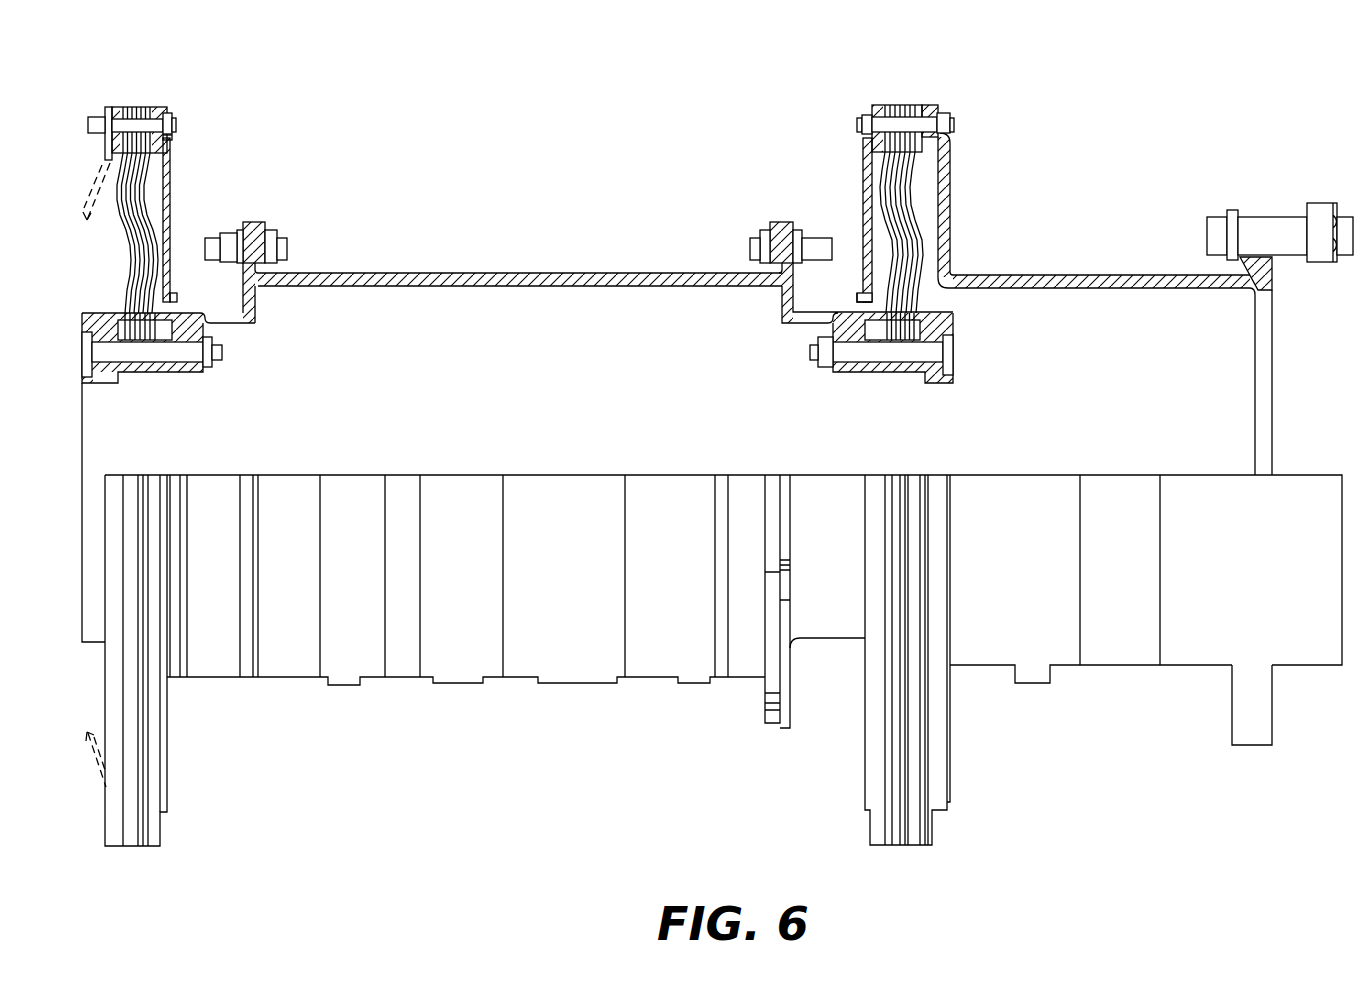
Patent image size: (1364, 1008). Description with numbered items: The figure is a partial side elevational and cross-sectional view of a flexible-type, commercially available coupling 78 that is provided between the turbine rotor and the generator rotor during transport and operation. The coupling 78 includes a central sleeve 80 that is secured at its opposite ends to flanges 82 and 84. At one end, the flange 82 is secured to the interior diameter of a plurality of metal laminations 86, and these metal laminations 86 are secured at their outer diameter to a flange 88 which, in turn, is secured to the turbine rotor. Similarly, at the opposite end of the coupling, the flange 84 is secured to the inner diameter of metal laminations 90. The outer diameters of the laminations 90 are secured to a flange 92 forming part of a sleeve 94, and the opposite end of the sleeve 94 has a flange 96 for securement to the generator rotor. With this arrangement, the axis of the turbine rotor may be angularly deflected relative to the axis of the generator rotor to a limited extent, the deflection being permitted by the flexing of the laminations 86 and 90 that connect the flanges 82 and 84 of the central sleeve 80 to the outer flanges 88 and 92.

The coupling 78 is at (623, 221).
The central sleeve 80 is at (470, 272).
The flange 82 is at (243, 288).
The flange 84 is at (790, 288).
The metal laminations 86 is at (130, 240).
The flange 88 is at (162, 107).
The metal laminations 90 is at (913, 288).
The flange 92 is at (945, 140).
The sleeve 94 is at (1111, 277).
The flange 96 is at (1258, 267).